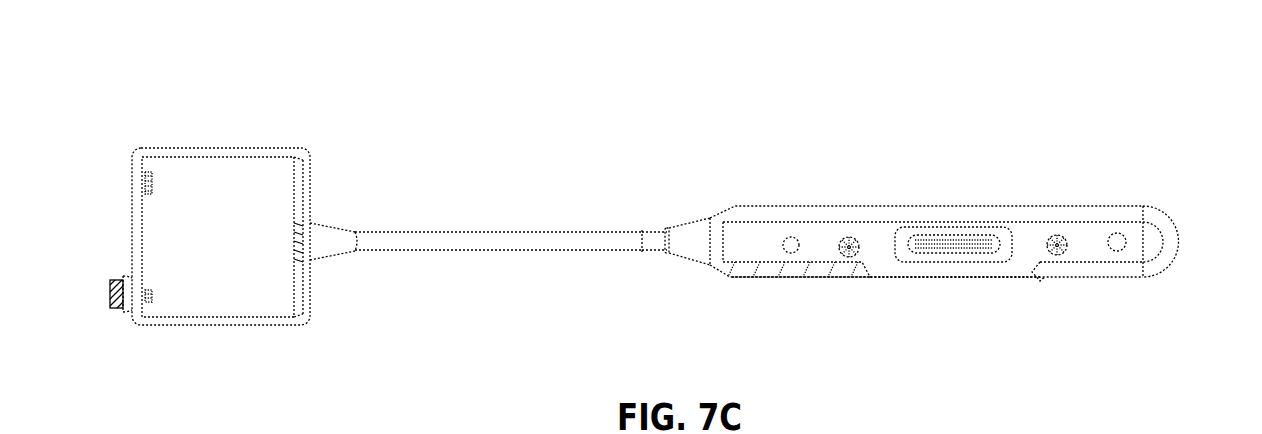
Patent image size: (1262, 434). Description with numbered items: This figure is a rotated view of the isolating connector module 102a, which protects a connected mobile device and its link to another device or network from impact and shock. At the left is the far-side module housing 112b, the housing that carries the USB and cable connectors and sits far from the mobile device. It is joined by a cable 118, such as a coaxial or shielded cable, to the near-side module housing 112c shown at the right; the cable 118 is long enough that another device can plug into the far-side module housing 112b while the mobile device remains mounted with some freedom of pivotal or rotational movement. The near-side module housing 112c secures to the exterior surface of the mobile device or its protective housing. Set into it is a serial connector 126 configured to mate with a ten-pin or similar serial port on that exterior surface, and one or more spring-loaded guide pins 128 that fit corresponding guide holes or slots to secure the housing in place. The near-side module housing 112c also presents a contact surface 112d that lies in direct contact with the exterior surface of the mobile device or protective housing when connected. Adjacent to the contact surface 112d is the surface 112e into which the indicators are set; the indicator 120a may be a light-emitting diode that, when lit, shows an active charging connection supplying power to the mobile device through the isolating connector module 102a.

The isolating connector module 102a is at (167, 83).
The far-side module housing 112b is at (220, 315).
The cable 118 is at (473, 235).
The near-side module housing 112c is at (1190, 237).
The contact surface 112d is at (1087, 238).
The surface into which the indicators are set 112e is at (912, 278).
The indicator 120a is at (870, 278).
The serial connector 126 is at (968, 238).
The spring-loaded guide pin 128 is at (790, 233).